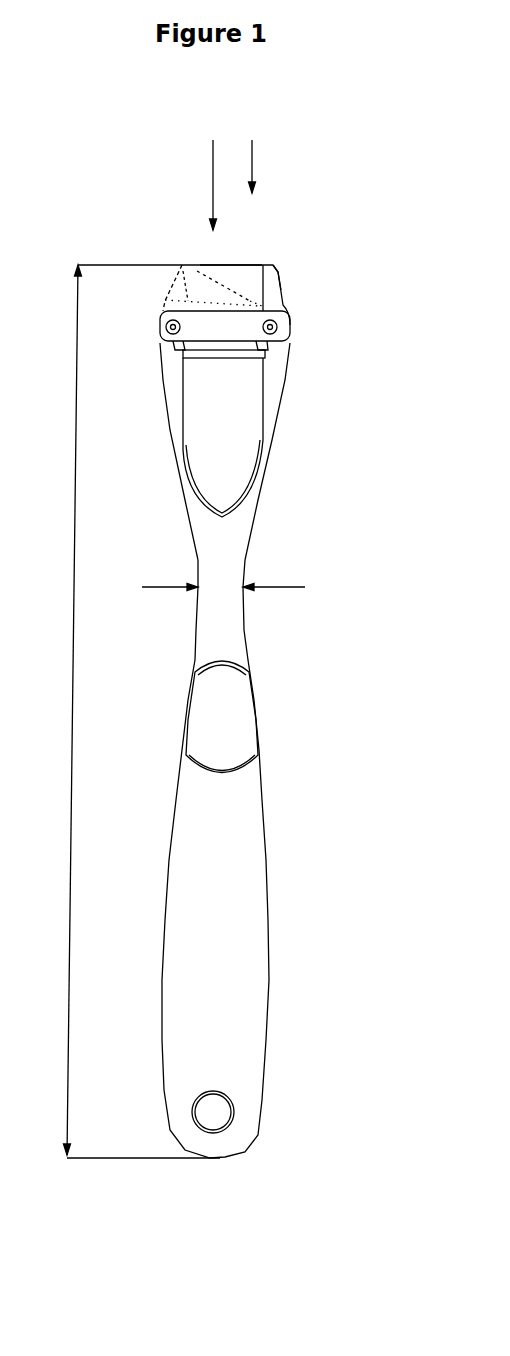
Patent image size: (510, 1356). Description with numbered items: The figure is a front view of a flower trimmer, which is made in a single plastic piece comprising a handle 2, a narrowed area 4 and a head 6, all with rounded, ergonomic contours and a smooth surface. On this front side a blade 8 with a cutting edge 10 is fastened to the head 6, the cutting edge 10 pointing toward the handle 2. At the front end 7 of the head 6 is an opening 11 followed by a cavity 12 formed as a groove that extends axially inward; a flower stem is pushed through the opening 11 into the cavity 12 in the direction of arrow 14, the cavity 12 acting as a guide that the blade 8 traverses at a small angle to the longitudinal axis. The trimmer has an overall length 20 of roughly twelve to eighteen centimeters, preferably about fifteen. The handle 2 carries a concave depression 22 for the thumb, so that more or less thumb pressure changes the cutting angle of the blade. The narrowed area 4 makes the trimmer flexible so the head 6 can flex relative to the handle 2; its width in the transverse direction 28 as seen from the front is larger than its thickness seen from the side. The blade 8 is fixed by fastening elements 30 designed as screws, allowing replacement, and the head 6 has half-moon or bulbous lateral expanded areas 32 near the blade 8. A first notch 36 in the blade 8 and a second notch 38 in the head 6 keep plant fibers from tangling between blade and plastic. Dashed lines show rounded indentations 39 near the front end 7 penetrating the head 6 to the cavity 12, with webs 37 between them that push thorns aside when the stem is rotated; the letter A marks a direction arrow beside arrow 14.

The handle 2 is at (242, 1020).
The narrowed area 4 is at (228, 625).
The head 6 is at (267, 289).
The front end 7 is at (284, 272).
The blade 8 is at (230, 326).
The cutting edge 10 is at (212, 352).
The opening 11 is at (233, 265).
The cavity 12 is at (183, 305).
The arrow 14 is at (212, 177).
The length 20 is at (138, 711).
The concave depression 22 is at (227, 720).
The material thickness 28 is at (241, 575).
The fastening elements 30 is at (277, 329).
The lateral expanded areas 32 is at (265, 343).
The first notch 36 is at (180, 343).
The webs 37 is at (175, 292).
The second notch 38 is at (185, 347).
The indentations 39 is at (190, 268).
The direction arrow A is at (267, 166).